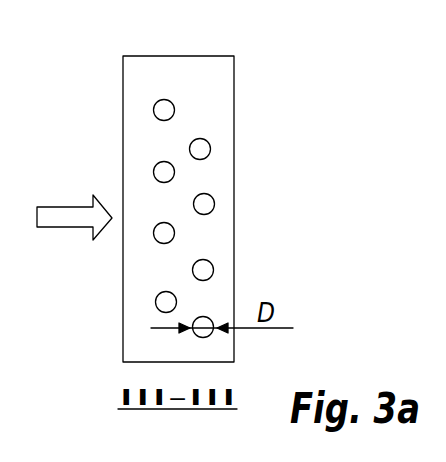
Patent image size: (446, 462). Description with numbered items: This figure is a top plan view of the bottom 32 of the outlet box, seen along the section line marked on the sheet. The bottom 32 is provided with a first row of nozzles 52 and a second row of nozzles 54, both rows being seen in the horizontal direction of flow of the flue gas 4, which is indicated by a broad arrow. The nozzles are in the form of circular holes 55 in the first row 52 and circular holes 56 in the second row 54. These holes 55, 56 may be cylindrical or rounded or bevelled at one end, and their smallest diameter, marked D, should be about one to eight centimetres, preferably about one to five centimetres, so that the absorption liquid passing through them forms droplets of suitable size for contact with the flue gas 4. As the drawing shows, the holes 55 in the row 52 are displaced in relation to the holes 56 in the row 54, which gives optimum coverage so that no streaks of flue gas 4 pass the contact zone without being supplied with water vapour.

The bottom 32 is at (228, 101).
The first row of nozzles 52 is at (160, 90).
The second row of nozzles 54 is at (203, 125).
The circular holes 55 is at (160, 108).
The circular holes 56 is at (203, 150).
The flue gas 4 is at (80, 206).